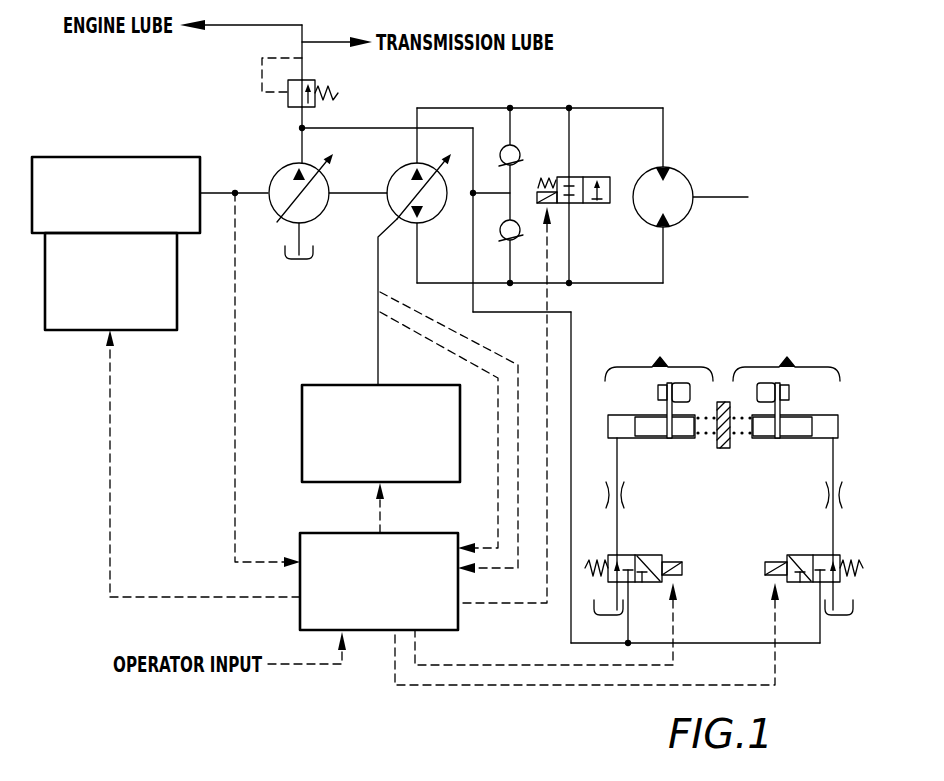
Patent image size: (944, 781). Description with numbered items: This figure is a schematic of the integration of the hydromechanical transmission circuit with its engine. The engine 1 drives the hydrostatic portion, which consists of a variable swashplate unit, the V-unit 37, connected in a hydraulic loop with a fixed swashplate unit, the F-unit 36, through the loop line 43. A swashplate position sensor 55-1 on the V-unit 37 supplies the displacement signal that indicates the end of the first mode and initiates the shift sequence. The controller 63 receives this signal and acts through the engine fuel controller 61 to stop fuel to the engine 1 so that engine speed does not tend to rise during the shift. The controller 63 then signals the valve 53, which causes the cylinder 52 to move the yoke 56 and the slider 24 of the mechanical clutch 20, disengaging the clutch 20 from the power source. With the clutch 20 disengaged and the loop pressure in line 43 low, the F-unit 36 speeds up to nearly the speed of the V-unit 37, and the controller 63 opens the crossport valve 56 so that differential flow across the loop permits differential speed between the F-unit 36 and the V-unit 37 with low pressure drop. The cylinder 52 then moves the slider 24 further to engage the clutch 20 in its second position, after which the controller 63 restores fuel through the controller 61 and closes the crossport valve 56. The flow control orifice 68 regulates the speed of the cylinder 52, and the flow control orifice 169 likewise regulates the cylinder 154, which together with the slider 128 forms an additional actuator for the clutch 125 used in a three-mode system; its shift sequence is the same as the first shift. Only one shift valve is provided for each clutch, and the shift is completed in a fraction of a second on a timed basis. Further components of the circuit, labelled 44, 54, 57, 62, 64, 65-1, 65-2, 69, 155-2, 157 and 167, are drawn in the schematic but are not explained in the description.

The engine 1 is at (87, 157).
The mechanical clutch 20 is at (659, 356).
The slider 24 is at (657, 390).
The F-unit 36 is at (685, 172).
The V-unit 37 is at (400, 172).
The line 43 is at (531, 107).
The second hydraulic line 44 is at (664, 268).
The cylinder 52 is at (608, 427).
The valve 53 is at (648, 554).
The engine output shaft 54 is at (223, 193).
The swashplate position sensor 55-1 is at (407, 303).
The crossport valve 56 is at (588, 176).
The pump displacement control line 57 is at (386, 229).
The engine fuel controller 61 is at (85, 330).
The electronic ratio control 62 is at (348, 384).
The controller 63 is at (350, 533).
The pressure relief valve 64 is at (316, 81).
The first check valve 65-1 is at (518, 156).
The second check valve 65-2 is at (516, 235).
The flow control orifice 68 is at (626, 496).
The charge pump 69 is at (280, 167).
The clutch 125 is at (786, 356).
The slider 128 is at (792, 390).
The cylinder 154 is at (838, 427).
The second sensor signal line 155-2 is at (405, 325).
The second clutch sensor rod 157 is at (780, 439).
The second clutch solenoid valve 167 is at (803, 554).
The flow control orifice 169 is at (826, 497).